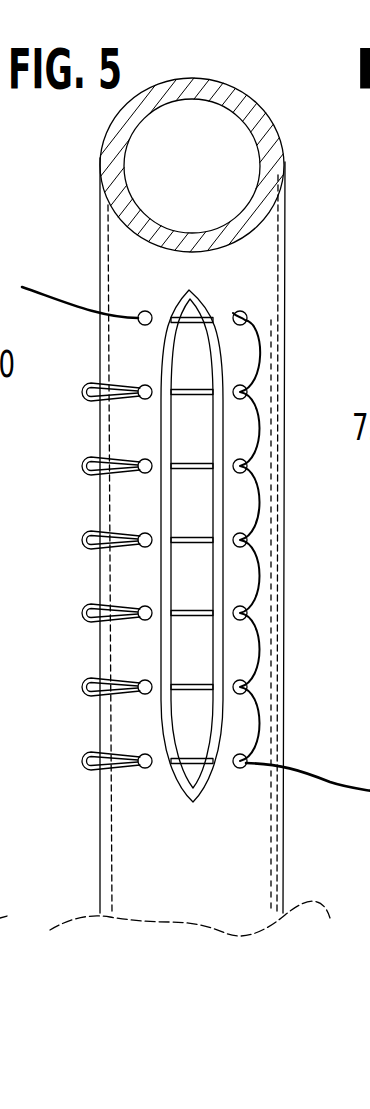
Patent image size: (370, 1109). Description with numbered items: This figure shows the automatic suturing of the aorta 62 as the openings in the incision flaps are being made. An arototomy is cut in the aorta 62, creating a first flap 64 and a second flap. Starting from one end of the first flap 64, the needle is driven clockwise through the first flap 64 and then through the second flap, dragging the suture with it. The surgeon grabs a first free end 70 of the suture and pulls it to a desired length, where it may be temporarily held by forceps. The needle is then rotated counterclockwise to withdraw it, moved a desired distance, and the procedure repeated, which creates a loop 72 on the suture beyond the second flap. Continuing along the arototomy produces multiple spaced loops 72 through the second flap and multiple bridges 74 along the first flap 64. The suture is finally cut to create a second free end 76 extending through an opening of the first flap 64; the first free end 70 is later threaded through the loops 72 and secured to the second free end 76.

The aorta 62 is at (185, 117).
The first flap 64 is at (165, 507).
The first free end 70 is at (53, 294).
The loop 72 is at (81, 399).
The bridge 74 is at (262, 356).
The second free end 76 is at (313, 777).